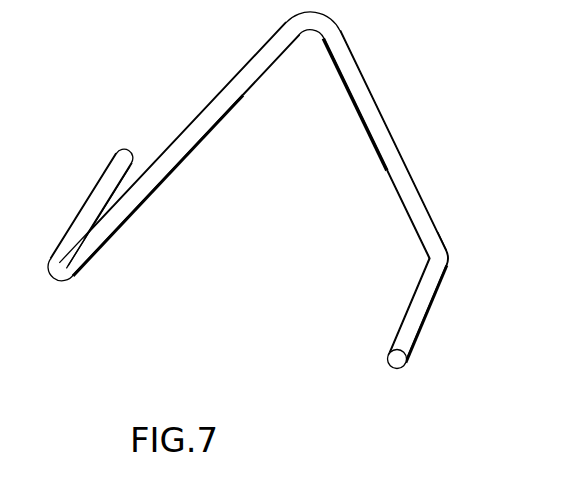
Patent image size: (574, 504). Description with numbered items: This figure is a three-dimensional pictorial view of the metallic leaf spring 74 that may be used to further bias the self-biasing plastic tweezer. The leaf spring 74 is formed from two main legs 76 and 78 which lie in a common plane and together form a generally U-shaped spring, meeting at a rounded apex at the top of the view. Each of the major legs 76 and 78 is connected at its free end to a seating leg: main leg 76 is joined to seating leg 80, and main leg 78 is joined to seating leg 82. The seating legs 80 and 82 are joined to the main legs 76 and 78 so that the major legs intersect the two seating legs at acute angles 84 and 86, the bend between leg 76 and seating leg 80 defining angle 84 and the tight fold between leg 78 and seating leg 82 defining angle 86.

The leaf spring 74 is at (403, 124).
The main leg 76 is at (406, 166).
The main leg 78 is at (221, 90).
The seating leg 80 is at (425, 317).
The seating leg 82 is at (93, 190).
The acute angle 84 is at (425, 274).
The acute angle 86 is at (140, 170).